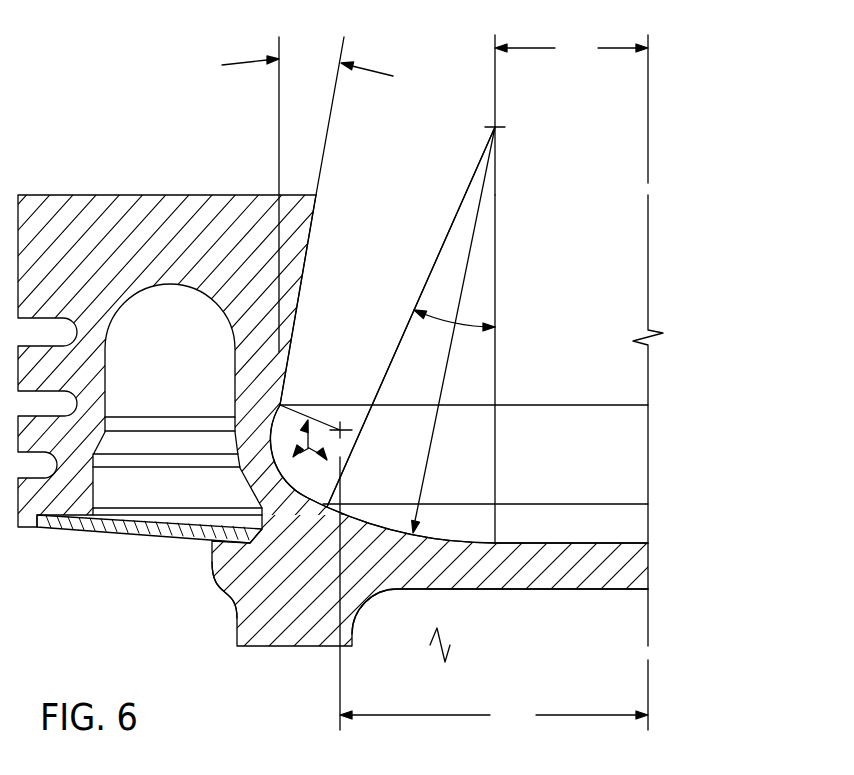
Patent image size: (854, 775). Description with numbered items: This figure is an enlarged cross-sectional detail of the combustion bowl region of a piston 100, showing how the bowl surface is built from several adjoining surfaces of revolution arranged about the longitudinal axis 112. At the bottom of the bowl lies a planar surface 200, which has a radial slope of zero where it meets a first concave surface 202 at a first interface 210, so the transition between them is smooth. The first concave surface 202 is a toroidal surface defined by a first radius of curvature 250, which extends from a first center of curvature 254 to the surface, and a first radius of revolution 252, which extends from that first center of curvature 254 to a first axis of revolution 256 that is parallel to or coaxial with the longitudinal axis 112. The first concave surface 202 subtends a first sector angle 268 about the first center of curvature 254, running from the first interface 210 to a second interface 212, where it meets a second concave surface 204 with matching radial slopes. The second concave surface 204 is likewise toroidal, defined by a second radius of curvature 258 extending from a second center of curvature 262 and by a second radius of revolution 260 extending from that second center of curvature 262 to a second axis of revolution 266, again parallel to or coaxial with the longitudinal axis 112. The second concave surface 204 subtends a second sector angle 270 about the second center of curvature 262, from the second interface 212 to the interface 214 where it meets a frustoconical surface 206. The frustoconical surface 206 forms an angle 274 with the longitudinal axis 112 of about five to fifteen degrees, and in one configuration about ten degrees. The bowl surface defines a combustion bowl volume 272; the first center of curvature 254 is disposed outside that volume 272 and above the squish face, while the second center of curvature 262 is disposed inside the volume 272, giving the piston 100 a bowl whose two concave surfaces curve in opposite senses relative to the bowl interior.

The piston 100 is at (136, 92).
The longitudinal axis 112 is at (648, 108).
The planar surface 200 is at (595, 543).
The first concave surface 202 is at (373, 507).
The second concave surface 204 is at (308, 420).
The frustoconical surface 206 is at (308, 243).
The first interface 210 is at (540, 560).
The second interface 212 is at (618, 505).
The second interface 214 is at (287, 385).
The first radius of curvature 250 is at (432, 448).
The first radius of revolution 252 is at (571, 48).
The first center of curvature 254 is at (493, 126).
The first axis of revolution 256 is at (648, 262).
The second radius of curvature 258 is at (325, 495).
The second radius of revolution 260 is at (494, 715).
The second center of curvature 262 is at (341, 422).
The second axis of revolution 266 is at (648, 614).
The first sector angle 268 is at (460, 318).
The second sector angle 270 is at (300, 435).
The combustion bowl volume 272 is at (595, 244).
The angle 274 is at (307, 194).